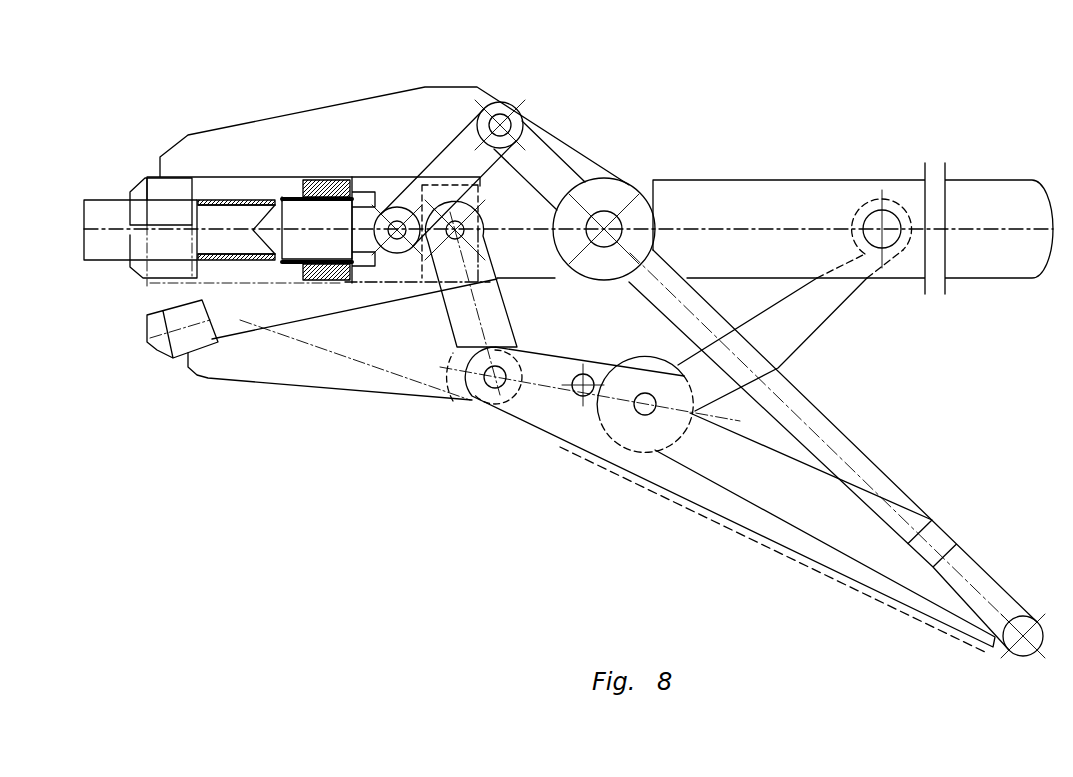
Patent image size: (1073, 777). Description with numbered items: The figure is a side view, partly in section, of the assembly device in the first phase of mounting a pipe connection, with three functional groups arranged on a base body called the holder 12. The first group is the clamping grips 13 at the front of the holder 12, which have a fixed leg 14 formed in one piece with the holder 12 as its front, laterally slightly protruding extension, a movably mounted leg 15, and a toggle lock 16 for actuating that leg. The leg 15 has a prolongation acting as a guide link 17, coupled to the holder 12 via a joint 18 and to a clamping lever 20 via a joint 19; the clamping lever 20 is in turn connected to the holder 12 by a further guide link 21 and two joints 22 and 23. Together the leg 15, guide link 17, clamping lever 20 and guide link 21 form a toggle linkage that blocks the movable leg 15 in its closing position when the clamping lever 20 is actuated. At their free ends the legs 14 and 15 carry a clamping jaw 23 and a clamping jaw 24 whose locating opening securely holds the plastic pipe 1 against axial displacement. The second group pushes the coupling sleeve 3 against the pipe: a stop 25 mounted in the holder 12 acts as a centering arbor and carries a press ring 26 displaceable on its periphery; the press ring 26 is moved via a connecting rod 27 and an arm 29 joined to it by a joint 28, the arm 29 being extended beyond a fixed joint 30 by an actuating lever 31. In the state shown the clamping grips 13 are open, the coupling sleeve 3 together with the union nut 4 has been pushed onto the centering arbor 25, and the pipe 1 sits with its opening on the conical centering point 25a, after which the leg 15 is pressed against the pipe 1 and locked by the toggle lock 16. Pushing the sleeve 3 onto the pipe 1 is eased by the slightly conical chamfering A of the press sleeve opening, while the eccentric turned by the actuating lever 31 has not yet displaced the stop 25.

The plastic pipe 1 is at (203, 262).
The coupling sleeve 3 is at (290, 197).
The union nut 4 is at (327, 180).
The holder 12 is at (688, 192).
The clamping grips 13 is at (412, 86).
The fixed leg 14 is at (190, 158).
The movable leg 15 is at (247, 370).
The toggle lock 16 is at (605, 465).
The guide link 17 is at (433, 338).
The joint 18 is at (473, 240).
The joint 19 is at (522, 356).
The clamping lever 20 is at (760, 503).
The guide link 21 is at (818, 318).
The joint 22 is at (882, 213).
The joint / clamping jaw 23 is at (152, 177).
The clamping jaw 24 is at (167, 355).
The stop 25 is at (300, 245).
The conical centering point 25a is at (267, 200).
The press ring 26 is at (377, 193).
The connecting rod 27 is at (452, 140).
The joint 28 is at (503, 128).
The arm 29 is at (553, 148).
The fixed joint 30 is at (610, 220).
The actuating lever 31 is at (883, 508).
The conical chamfering A is at (287, 197).